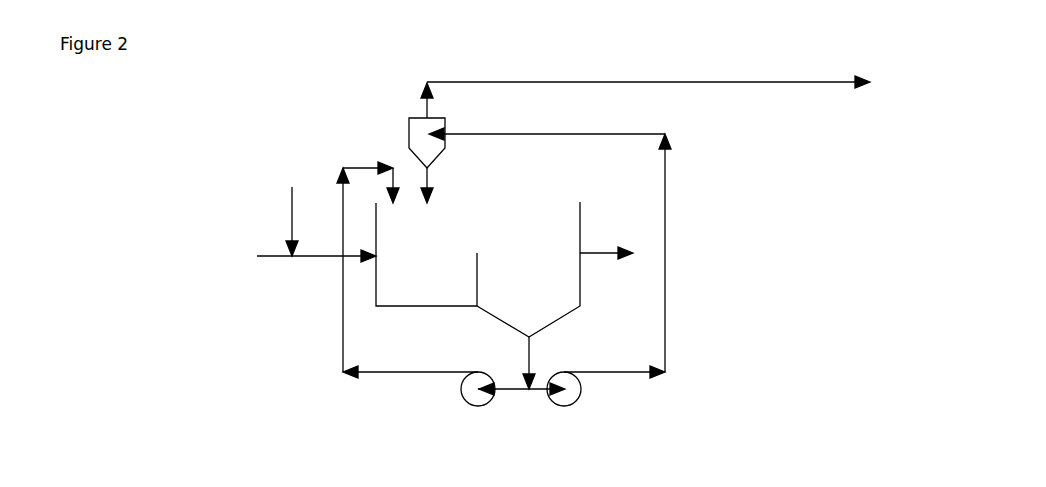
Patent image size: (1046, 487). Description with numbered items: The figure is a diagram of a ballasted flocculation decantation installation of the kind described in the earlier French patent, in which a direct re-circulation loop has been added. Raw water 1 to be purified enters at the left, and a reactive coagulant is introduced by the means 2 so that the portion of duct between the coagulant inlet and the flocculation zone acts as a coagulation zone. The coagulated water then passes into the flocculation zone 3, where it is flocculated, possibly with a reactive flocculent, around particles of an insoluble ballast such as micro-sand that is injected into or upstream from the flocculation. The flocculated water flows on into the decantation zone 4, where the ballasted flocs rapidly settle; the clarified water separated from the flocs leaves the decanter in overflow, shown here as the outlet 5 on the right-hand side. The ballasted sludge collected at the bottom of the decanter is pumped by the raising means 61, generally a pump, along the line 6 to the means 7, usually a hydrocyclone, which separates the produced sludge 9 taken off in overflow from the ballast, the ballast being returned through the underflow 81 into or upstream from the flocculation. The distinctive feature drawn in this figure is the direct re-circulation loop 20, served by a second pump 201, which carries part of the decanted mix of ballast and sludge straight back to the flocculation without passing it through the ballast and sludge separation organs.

The raw water 1 is at (299, 279).
The means for leading reactive coagulant 2 is at (260, 213).
The flocculation zone 3 is at (426, 254).
The decantation zone 4 is at (528, 269).
The treated liquid outlet 5 is at (614, 230).
The sludge recycle line 6 is at (649, 256).
The means for extracting sludge 7 is at (371, 160).
The produced sludge 9 is at (645, 73).
The direct re-circulation loop 20 is at (377, 273).
The raising means 61 is at (568, 413).
The underflow 81 is at (458, 185).
The recirculation pump 201 is at (465, 414).